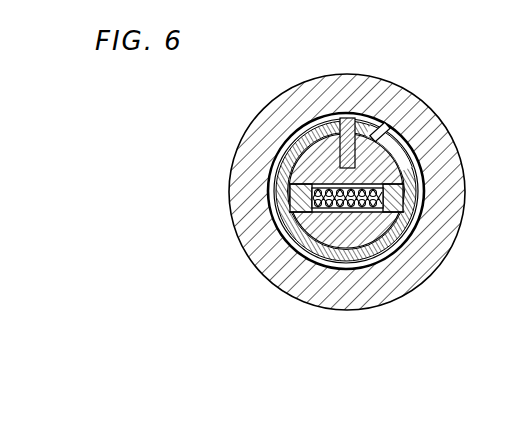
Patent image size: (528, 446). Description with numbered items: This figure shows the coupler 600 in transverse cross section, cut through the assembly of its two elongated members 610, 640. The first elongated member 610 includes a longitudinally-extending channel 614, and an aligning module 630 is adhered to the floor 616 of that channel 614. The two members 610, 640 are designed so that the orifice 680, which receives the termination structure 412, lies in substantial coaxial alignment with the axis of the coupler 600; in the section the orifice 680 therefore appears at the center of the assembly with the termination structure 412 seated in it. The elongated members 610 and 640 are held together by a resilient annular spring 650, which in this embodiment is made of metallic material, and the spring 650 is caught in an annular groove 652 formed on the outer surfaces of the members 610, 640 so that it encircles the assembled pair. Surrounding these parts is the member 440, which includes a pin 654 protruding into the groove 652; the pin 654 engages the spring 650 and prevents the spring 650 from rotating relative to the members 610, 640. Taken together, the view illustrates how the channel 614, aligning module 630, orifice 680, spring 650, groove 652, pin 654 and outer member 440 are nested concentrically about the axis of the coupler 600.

The termination structure 412 is at (298, 192).
The member 440 is at (334, 76).
The coupler 600 is at (284, 221).
The elongated member 610 is at (406, 238).
The channel 614 is at (305, 250).
The floor 616 is at (366, 270).
The aligning module 630 is at (287, 214).
The elongated member 640 is at (422, 157).
The resilient annular spring 650 is at (404, 223).
The annular groove 652 is at (400, 140).
The pin 654 is at (372, 118).
The orifice 680 is at (426, 188).